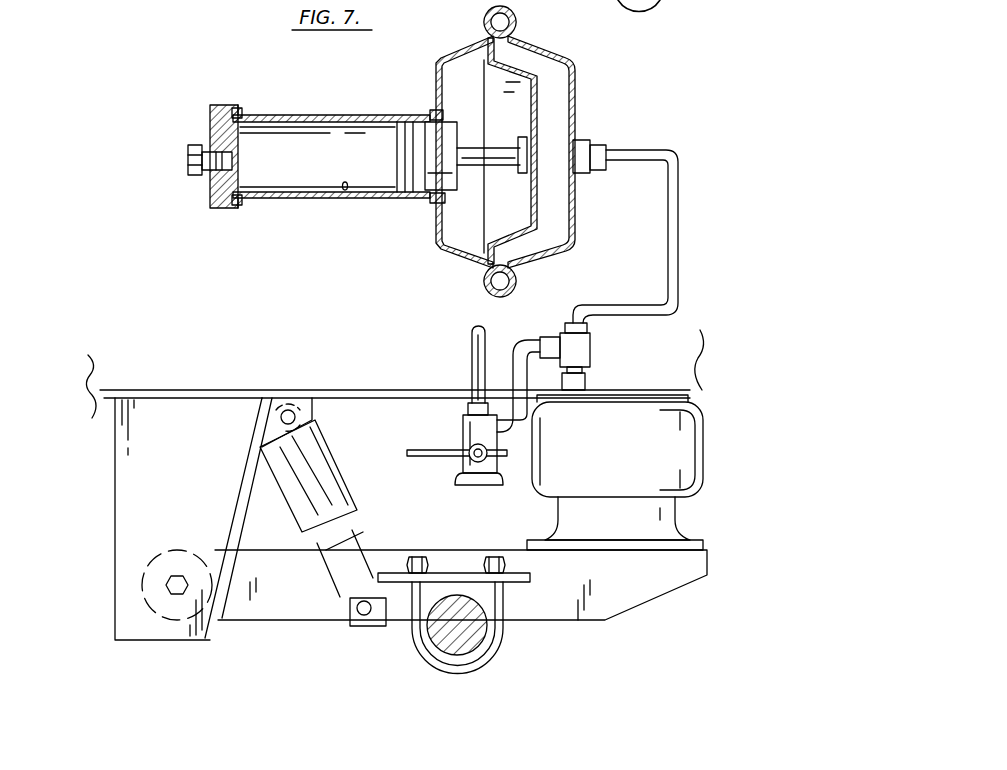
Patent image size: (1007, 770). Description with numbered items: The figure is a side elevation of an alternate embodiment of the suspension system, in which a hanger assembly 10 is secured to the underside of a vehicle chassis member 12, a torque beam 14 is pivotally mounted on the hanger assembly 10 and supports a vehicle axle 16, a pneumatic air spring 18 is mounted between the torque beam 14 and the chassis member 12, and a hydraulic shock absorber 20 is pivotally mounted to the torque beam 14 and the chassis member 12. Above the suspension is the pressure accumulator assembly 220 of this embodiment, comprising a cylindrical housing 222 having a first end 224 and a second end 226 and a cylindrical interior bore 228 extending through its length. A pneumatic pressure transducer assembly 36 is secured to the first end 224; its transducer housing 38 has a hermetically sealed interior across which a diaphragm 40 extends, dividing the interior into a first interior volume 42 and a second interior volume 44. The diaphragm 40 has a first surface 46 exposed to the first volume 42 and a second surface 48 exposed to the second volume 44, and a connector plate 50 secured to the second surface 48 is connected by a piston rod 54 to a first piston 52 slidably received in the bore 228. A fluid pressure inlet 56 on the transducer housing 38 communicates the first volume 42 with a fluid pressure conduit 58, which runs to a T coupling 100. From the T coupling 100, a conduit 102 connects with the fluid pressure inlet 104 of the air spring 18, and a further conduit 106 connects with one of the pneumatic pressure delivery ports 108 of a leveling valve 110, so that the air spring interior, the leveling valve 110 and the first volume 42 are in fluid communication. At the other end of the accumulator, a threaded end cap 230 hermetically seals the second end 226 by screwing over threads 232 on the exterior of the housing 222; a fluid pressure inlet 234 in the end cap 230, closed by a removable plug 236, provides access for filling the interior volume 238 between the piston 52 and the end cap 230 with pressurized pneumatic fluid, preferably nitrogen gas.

The hanger assembly 10 is at (125, 492).
The vehicle chassis member 12 is at (95, 402).
The torque beam 14 is at (648, 592).
The vehicle axle 16 is at (486, 641).
The pneumatic air spring 18 is at (702, 452).
The hydraulic shock absorber 20 is at (346, 470).
The pneumatic pressure transducer assembly 36 is at (573, 163).
The transducer housing 38 is at (576, 68).
The diaphragm 40 is at (548, 95).
The first interior volume 42 is at (560, 120).
The second interior volume 44 is at (470, 60).
The first diaphragm surface 46 is at (540, 226).
The second diaphragm surface 48 is at (510, 228).
The connector plate 50 is at (525, 110).
The first piston 52 is at (432, 118).
The piston rod 54 is at (476, 170).
The fluid pressure inlet 56 is at (598, 172).
The fluid pressure conduit 58 is at (680, 245).
The T coupling 100 is at (572, 326).
The fluid pressure conduit 102 is at (592, 350).
The fluid pressure inlet 104 is at (586, 381).
The fluid pressure conduit 106 is at (520, 347).
The pneumatic pressure delivery port 108 is at (500, 470).
The leveling valve 110 is at (478, 486).
The pressure accumulator assembly 220 is at (290, 166).
The cylindrical housing 222 is at (310, 114).
The first end 224 is at (442, 208).
The second end 226 is at (222, 200).
The cylindrical interior bore 228 is at (344, 191).
The threaded end cap 230 is at (212, 108).
The threads 232 is at (238, 112).
The fluid pressure inlet 234 is at (200, 148).
The removable plug 236 is at (198, 172).
The interior volume 238 is at (263, 195).